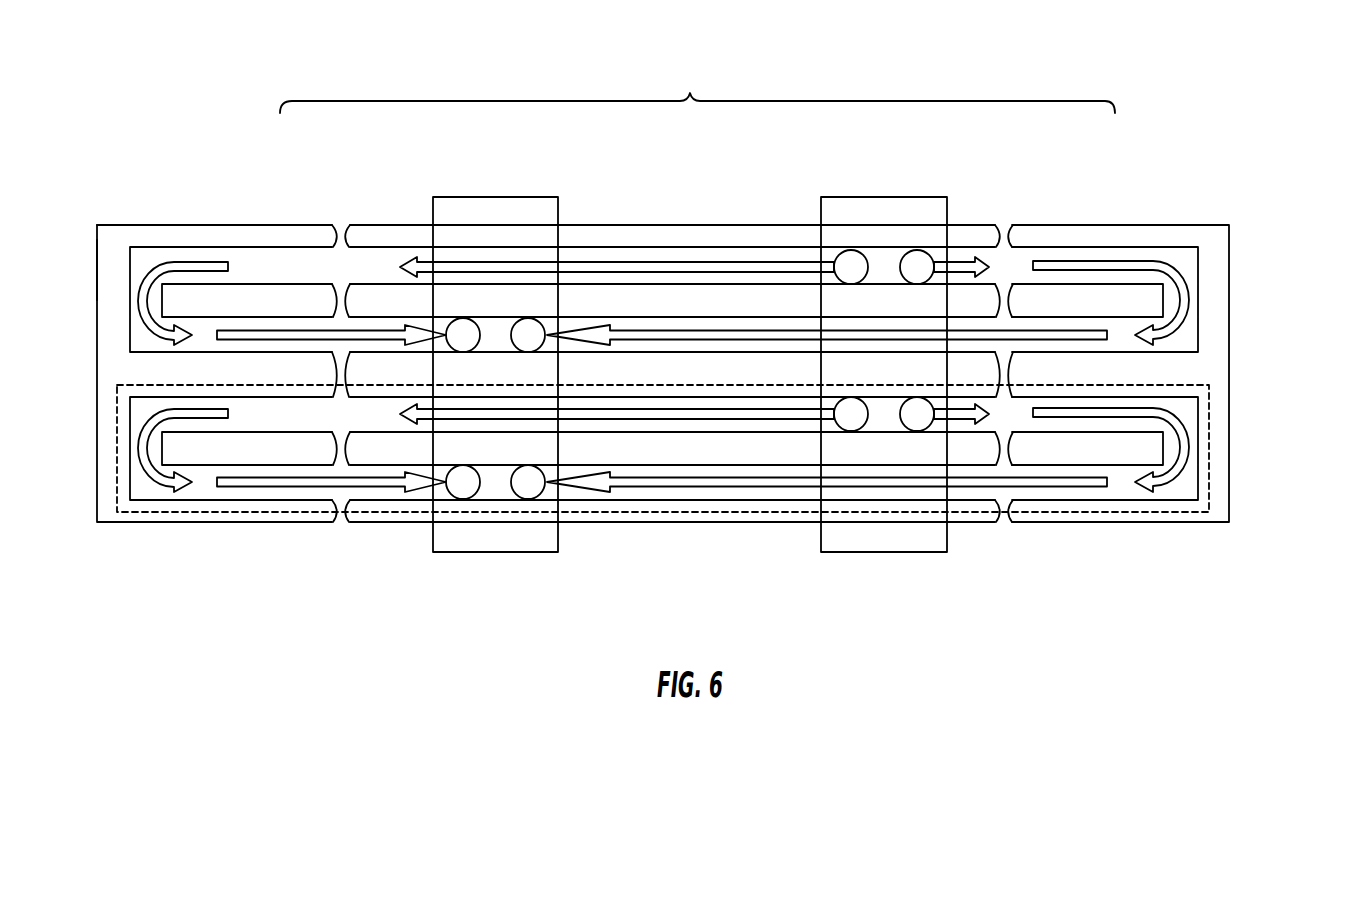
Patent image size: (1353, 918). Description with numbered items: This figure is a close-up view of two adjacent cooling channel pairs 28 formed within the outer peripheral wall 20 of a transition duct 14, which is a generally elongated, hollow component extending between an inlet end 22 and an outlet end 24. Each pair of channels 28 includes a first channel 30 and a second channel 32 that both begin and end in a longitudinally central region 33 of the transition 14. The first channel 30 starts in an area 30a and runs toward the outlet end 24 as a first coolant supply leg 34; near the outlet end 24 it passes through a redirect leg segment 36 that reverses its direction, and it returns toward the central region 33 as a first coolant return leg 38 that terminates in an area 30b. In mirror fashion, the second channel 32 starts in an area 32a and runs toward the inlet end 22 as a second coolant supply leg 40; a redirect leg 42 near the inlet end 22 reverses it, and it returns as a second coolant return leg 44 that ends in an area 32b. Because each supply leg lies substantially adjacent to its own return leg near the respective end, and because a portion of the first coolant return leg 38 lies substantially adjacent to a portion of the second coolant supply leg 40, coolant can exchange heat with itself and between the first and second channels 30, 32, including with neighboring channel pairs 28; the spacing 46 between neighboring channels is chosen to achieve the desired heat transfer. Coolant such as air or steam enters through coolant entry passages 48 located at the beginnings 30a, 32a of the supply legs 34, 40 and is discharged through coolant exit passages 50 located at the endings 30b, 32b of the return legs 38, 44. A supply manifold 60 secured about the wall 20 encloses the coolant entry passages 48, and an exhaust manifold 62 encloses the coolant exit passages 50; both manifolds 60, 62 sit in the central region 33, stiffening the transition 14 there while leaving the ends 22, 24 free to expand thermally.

The transition duct 14 is at (252, 108).
The outer peripheral wall 20 is at (109, 225).
The inlet end 22 is at (95, 281).
The outlet end 24 is at (1230, 300).
The pair of cooling channels 28 is at (1212, 484).
The first channel 30 is at (1103, 248).
The beginning area of first coolant supply leg 30a is at (920, 250).
The ending area of first coolant return leg 30b is at (533, 351).
The second channel 32 is at (688, 248).
The beginning area of second coolant supply leg 32a is at (855, 250).
The ending area of second coolant return leg 32b is at (458, 351).
The longitudinally central region 33 is at (697, 86).
The first coolant supply leg 34 is at (1020, 260).
The redirect leg segment 36 is at (1186, 265).
The first coolant return leg 38 is at (1040, 347).
The second coolant supply leg 40 is at (612, 256).
The redirect leg 42 is at (140, 258).
The second coolant return leg 44 is at (256, 345).
The spacing 46 is at (783, 297).
The coolant entry passages 48 is at (853, 432).
The coolant exit passages 50 is at (463, 500).
The supply manifold 60 is at (833, 553).
The exhaust manifold 62 is at (522, 196).